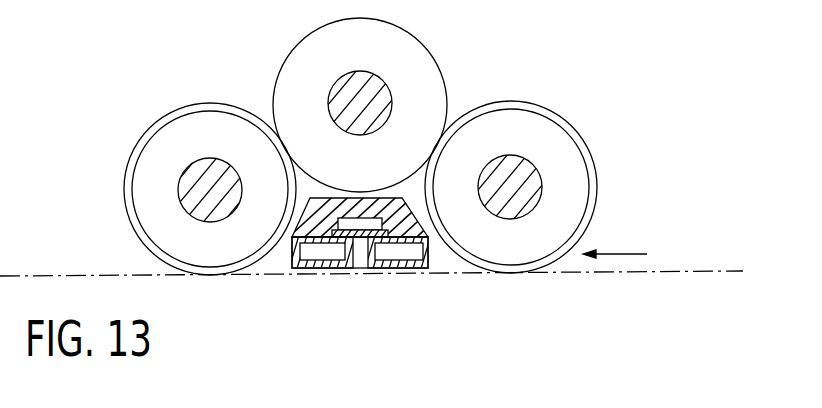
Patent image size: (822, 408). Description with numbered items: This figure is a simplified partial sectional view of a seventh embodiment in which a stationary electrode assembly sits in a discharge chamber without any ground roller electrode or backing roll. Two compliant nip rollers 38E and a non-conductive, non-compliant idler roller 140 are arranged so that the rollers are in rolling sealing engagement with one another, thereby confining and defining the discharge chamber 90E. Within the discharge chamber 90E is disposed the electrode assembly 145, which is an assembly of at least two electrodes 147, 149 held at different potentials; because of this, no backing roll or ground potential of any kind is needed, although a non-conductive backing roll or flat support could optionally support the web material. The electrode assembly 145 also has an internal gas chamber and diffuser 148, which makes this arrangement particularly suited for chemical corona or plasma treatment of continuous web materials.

The compliant nip rollers 38E is at (150, 128).
The idler roller 140 is at (422, 44).
The electrode assembly 145 is at (416, 214).
The internal gas chamber and diffuser 148 is at (358, 230).
The discharge chamber 90E is at (279, 260).
The electrode 147 is at (322, 268).
The electrode 149 is at (398, 268).